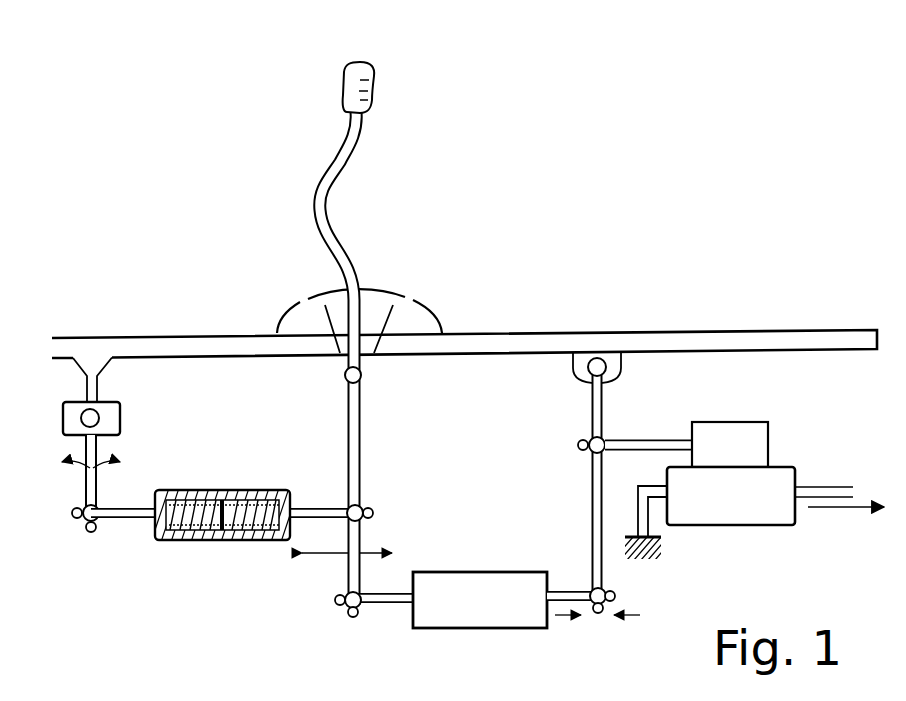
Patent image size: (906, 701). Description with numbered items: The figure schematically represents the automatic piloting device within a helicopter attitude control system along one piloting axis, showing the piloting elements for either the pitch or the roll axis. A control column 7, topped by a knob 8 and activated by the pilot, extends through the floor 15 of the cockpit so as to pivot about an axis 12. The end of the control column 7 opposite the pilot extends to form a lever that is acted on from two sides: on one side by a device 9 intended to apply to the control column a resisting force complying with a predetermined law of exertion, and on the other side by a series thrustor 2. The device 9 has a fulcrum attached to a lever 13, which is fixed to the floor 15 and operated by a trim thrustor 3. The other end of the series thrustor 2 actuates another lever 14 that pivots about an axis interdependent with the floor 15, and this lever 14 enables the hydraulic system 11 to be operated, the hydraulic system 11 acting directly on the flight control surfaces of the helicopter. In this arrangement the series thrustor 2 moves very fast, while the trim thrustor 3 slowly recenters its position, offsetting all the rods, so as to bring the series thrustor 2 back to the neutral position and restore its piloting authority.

The series thrustor 2 is at (470, 632).
The trim thrustor 3 is at (127, 417).
The control column 7 is at (320, 168).
The knob 8 is at (350, 60).
The device 9 is at (212, 545).
The hydraulic system 11 is at (743, 525).
The axis 12 is at (361, 372).
The lever 13 is at (88, 488).
The lever 14 is at (592, 508).
The floor 15 is at (528, 340).